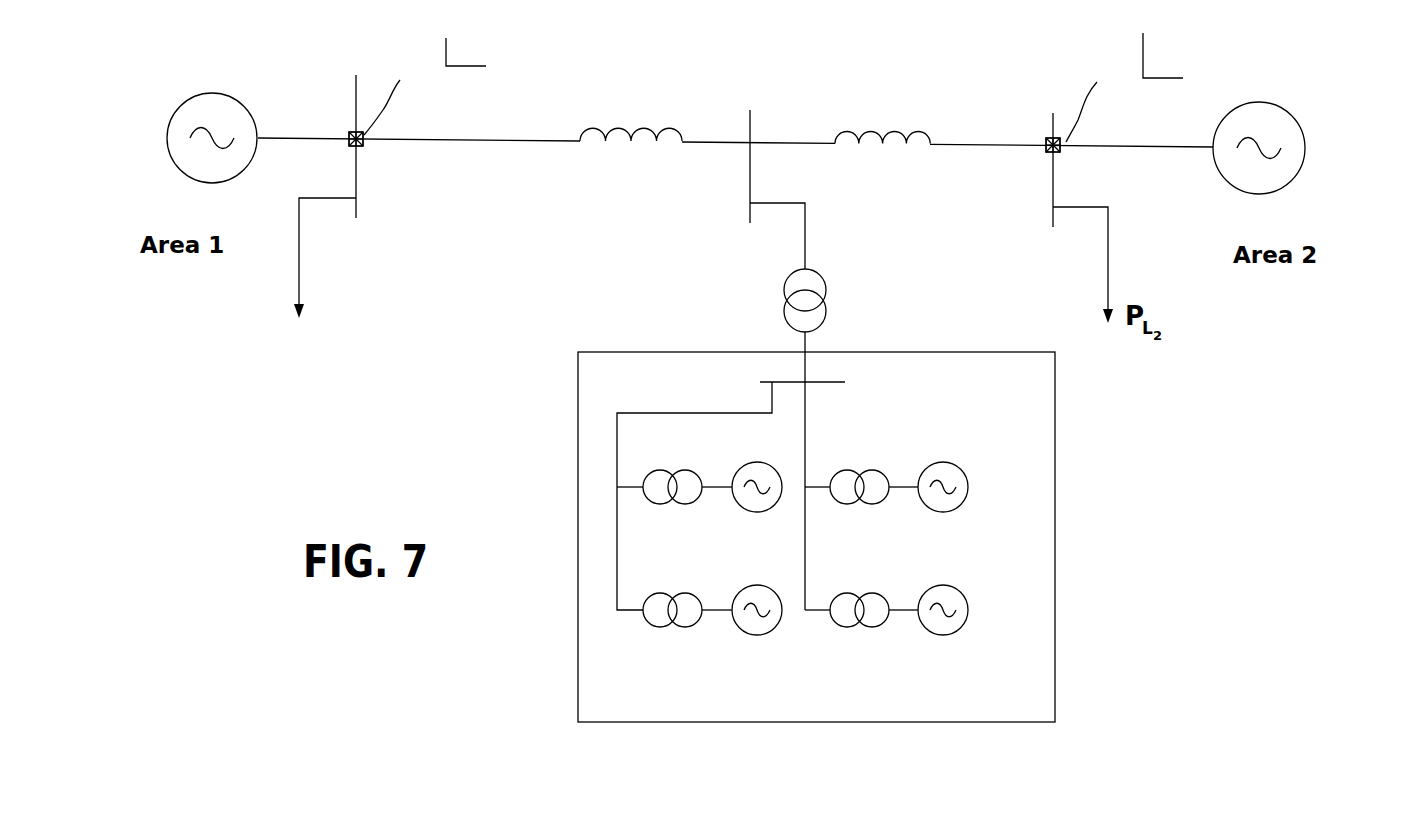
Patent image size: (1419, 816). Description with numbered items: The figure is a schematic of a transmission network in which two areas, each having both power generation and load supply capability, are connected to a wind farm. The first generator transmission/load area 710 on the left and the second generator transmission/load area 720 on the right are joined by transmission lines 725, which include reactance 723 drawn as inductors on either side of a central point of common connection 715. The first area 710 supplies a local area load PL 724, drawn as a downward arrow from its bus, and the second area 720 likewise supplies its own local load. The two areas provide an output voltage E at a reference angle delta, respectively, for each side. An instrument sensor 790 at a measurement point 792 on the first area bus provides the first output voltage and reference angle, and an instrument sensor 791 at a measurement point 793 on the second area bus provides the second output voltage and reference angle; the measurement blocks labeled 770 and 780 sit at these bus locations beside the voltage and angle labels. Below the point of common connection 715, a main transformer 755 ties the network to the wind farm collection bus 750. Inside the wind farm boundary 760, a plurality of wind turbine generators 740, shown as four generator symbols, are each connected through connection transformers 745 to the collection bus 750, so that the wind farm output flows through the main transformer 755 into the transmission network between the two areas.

The generator transmission/load area 1 710 is at (152, 174).
The generator transmission/load area 2 720 is at (1312, 152).
The point of common connection 715 is at (746, 145).
The reactance 723 is at (620, 129).
The local area load PL1 724 is at (340, 313).
The transmission lines 725 is at (515, 140).
The wind turbine generators 740 is at (962, 471).
The connection transformers 745 is at (658, 470).
The collection bus 750 is at (835, 378).
The main transformer 755 is at (827, 287).
The wind farm 760 is at (1055, 483).
The phasor measurement at bus 1 770 is at (393, 53).
The phasor measurement at bus 2 780 is at (1090, 60).
The instrument sensor 790 is at (345, 137).
The instrument sensor 791 is at (1044, 157).
The measurement point 792 is at (365, 145).
The measurement point 793 is at (1061, 151).